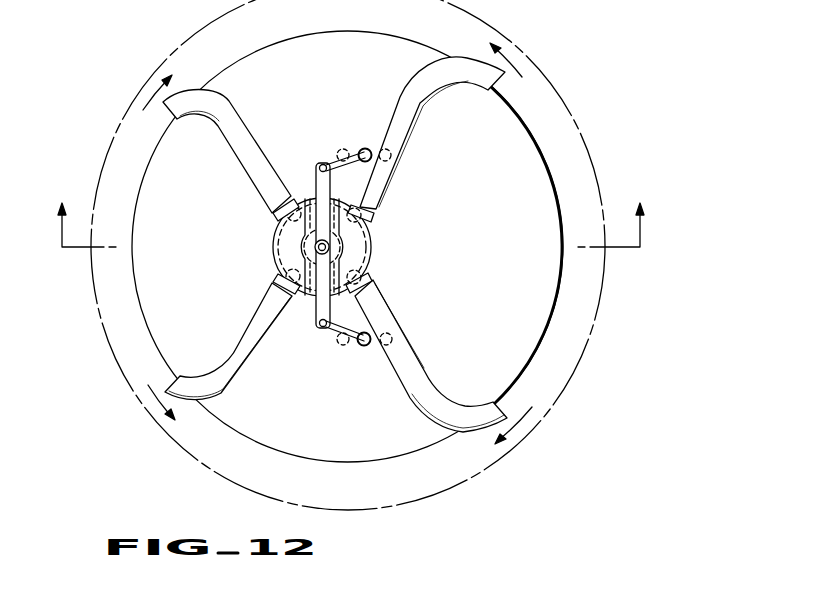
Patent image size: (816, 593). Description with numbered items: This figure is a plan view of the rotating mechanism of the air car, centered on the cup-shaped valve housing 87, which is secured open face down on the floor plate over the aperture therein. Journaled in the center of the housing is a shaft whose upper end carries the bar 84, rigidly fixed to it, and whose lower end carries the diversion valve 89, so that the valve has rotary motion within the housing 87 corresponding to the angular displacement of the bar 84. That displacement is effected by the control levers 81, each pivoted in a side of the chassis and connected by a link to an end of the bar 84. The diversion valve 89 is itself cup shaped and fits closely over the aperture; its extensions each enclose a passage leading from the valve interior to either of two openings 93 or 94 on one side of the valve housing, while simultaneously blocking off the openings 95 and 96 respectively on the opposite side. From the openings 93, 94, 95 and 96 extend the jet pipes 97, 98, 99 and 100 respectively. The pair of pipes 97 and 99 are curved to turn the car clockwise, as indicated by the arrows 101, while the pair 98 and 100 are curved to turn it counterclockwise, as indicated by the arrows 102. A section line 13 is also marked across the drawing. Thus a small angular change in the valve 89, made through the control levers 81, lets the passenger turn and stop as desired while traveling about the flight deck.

The section line 13- 13 is at (348, 237).
The control lever 81 is at (366, 149).
The bar 84 is at (318, 310).
The valve housing 87 is at (285, 229).
The diversion valve 89 is at (345, 247).
The opening 93 is at (302, 200).
The opening 94 is at (370, 229).
The opening 95 is at (372, 271).
The opening 96 is at (275, 266).
The jet pipe 97 is at (232, 136).
The jet pipe 98 is at (428, 97).
The jet pipe 99 is at (413, 376).
The jet pipe 100 is at (233, 359).
The arrows 101 is at (334, 262).
The arrows 102 is at (336, 233).